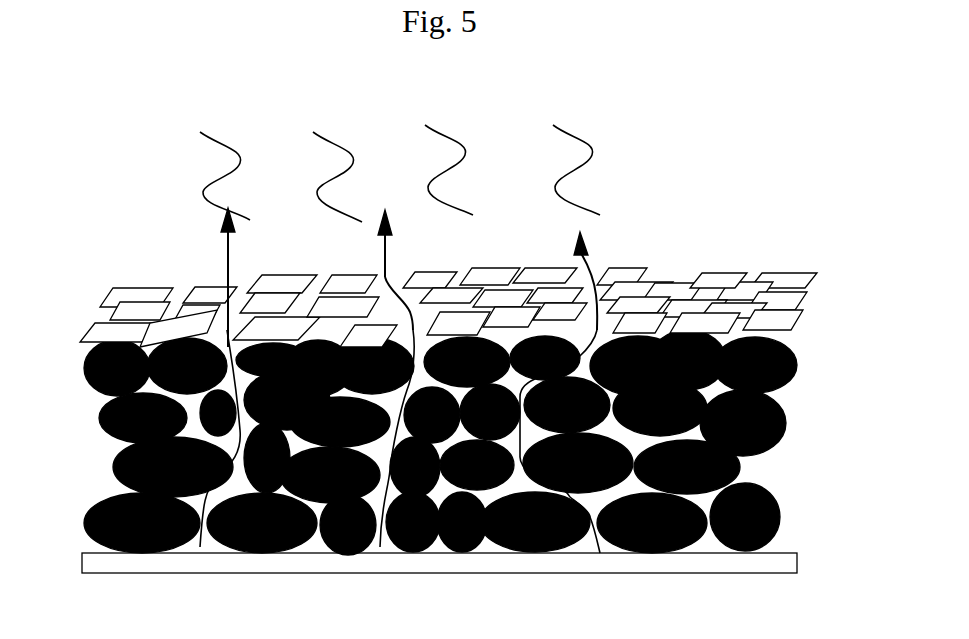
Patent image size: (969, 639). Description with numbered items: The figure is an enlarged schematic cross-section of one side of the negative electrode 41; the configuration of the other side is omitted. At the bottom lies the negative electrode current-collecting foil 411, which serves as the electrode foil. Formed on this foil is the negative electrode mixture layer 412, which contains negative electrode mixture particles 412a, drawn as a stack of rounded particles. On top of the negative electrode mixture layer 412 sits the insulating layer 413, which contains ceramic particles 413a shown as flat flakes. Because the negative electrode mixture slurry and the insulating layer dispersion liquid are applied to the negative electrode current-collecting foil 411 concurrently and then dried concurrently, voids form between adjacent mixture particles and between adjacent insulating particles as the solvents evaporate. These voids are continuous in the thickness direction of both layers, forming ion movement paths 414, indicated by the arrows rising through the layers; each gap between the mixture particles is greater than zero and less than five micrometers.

The negative electrode 41 is at (786, 141).
The negative electrode current-collecting foil 411 is at (86, 563).
The negative electrode mixture layer 412 is at (446, 442).
The negative electrode mixture particles 412a is at (782, 364).
The insulating layer 413 is at (413, 280).
The ceramic particles 413a is at (710, 280).
The ion movement paths 414 is at (224, 240).